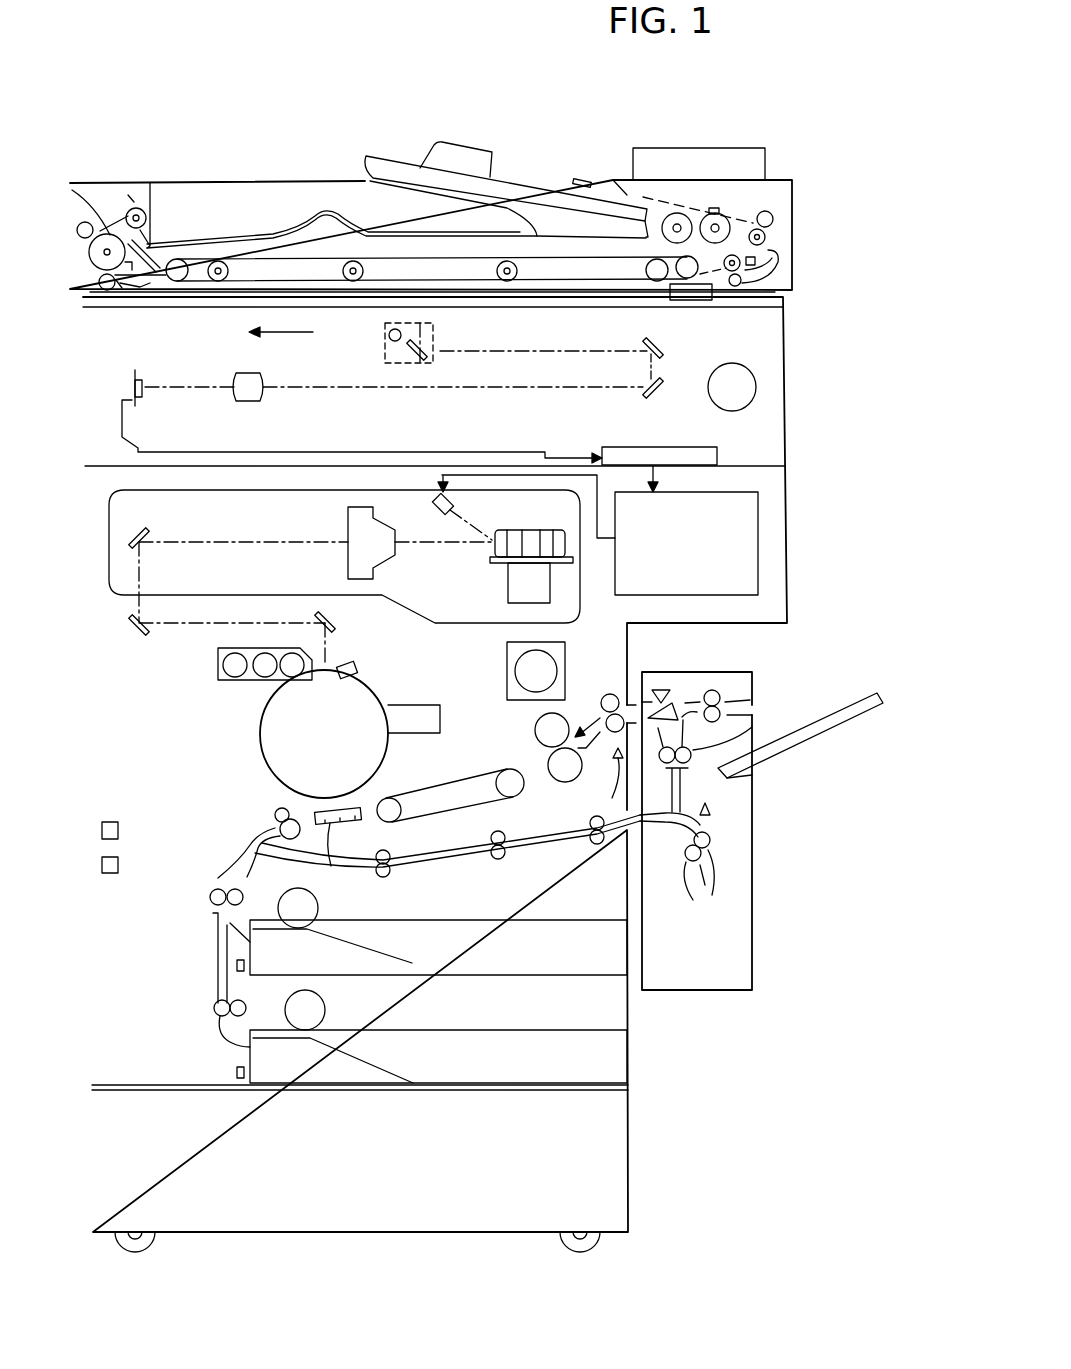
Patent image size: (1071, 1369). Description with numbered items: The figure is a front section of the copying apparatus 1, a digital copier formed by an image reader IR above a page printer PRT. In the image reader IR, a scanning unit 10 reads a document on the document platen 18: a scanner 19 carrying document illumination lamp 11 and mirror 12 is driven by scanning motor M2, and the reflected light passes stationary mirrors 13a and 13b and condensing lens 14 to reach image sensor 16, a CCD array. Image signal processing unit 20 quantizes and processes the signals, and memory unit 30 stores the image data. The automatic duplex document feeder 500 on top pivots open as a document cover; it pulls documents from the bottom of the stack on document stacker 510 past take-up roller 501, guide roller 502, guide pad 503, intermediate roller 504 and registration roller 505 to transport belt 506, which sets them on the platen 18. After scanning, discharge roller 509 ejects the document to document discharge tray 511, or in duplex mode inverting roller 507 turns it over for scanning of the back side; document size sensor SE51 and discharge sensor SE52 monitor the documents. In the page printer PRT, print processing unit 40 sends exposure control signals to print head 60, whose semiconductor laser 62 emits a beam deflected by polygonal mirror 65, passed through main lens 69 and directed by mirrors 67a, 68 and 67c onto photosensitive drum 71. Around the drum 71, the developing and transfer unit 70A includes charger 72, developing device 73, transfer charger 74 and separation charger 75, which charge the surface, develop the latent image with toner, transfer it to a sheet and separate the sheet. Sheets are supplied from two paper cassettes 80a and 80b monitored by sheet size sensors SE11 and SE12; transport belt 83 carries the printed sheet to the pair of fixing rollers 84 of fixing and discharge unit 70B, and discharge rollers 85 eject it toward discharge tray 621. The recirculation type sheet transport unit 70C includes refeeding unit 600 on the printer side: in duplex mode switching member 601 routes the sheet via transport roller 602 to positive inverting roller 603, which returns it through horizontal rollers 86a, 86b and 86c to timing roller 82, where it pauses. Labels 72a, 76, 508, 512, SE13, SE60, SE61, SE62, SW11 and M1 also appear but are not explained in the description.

The copying apparatus 1 is at (372, 94).
The scanning unit 10 is at (368, 369).
The document illumination lamp 11 is at (389, 335).
The mirror 12 is at (425, 357).
The stationary mirror 13a is at (663, 348).
The stationary mirror 13b is at (660, 395).
The condensing lens 14 is at (263, 398).
The image sensor 16 is at (143, 382).
The document platen 18 is at (535, 298).
The scanner 19 is at (433, 340).
The image signal processing unit 20 is at (483, 452).
The memory unit 30 is at (616, 450).
The print processing unit 40 is at (760, 520).
The print head 60 is at (300, 515).
The semiconductor laser 62 is at (428, 498).
The polygonal mirror 65 is at (530, 552).
The mirror 67a is at (143, 528).
The mirror 67c is at (318, 615).
The mirror 68 is at (128, 635).
The main lens 69 is at (348, 562).
The developing and transfer unit 70A is at (197, 694).
The fixing and discharge unit 70B is at (515, 761).
The recirculation type sheet transport unit 70C is at (472, 892).
The photosensitive drum 71 is at (287, 728).
The charger 72 is at (349, 661).
The charging electrode 72a is at (358, 677).
The developing device 73 is at (220, 656).
The transfer charger 74 is at (330, 868).
The separation charger 75 is at (358, 823).
The cleaner 76 is at (443, 714).
The paper cassette 80a is at (538, 942).
The paper cassette 80b is at (479, 1045).
The timing roller 82 is at (278, 809).
The transport belt 83 is at (418, 797).
The fixing rollers 84 is at (553, 778).
The discharge rollers 85 is at (606, 694).
The horizontal roller 86a is at (598, 845).
The horizontal roller 86b is at (498, 860).
The horizontal roller 86c is at (386, 878).
The automatic duplex document feeder 500 is at (283, 178).
The take-up roller 501 is at (673, 212).
The guide roller 502 is at (714, 212).
The guide pad 503 is at (722, 210).
The intermediate roller 504 is at (773, 215).
The registration roller 505 is at (772, 284).
The transport belt 506 is at (590, 290).
The inverting roller 507 is at (78, 222).
The roller 508 is at (134, 208).
The discharge roller 509 is at (150, 183).
The document stacker 510 is at (480, 175).
The document discharge tray 511 is at (222, 235).
The document scale 512 is at (700, 300).
The refeeding unit 600 is at (755, 880).
The switching member 601 is at (676, 692).
The transport roller 602 is at (750, 722).
The positive inverting roller 603 is at (693, 905).
The discharge tray 621 is at (843, 708).
The sheet size sensor SE11 is at (237, 966).
The sheet size sensor SE12 is at (237, 1073).
The sensor SE13 is at (118, 830).
The document size sensor SE51 is at (765, 240).
The discharge sensor SE52 is at (120, 285).
The document set sensor SE60 is at (582, 180).
The paper sensor SE61 is at (712, 812).
The paper sensor SE62 is at (618, 764).
The switch SW11 is at (118, 866).
The image reader IR is at (833, 387).
The page printer PRT is at (856, 594).
The main motor M1 is at (536, 671).
The scanning motor M2 is at (732, 387).